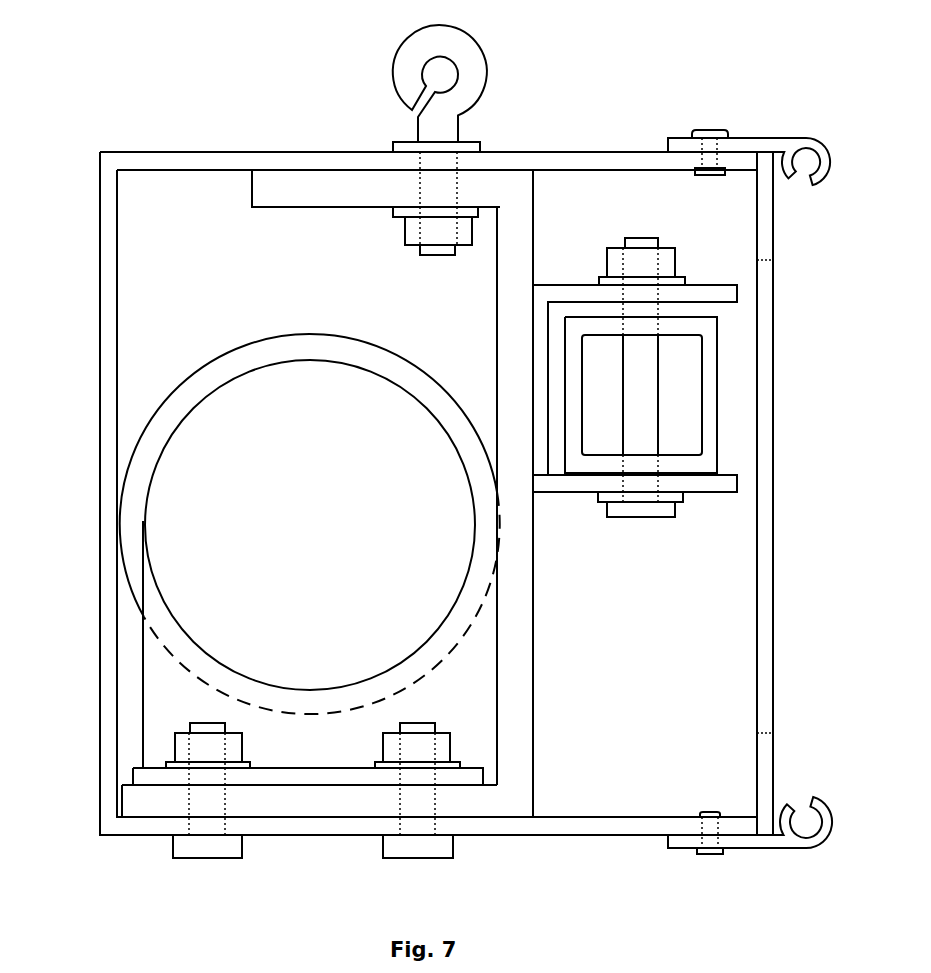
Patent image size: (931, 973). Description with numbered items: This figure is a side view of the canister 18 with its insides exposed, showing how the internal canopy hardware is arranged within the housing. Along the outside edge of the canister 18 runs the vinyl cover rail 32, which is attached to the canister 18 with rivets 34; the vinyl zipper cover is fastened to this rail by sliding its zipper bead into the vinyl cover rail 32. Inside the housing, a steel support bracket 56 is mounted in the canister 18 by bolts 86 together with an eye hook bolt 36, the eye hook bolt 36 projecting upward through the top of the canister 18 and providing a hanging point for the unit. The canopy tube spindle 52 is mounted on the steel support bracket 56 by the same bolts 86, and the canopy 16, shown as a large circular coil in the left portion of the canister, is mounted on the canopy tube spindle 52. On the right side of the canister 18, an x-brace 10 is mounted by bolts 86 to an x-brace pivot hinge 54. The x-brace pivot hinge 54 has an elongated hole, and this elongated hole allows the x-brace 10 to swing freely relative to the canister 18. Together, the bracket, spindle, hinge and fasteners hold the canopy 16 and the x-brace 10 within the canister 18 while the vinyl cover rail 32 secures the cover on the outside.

The x-brace 10 is at (717, 372).
The canopy 16 is at (225, 353).
The canister 18 is at (98, 223).
The vinyl cover rail 32 is at (777, 137).
The rivets 34 is at (700, 132).
The eye hook bolt 36 is at (487, 58).
The canopy tube spindle 52 is at (143, 688).
The x-brace pivot hinge 54 is at (693, 493).
The steel support bracket 56 is at (327, 212).
The bolts 86 is at (615, 518).